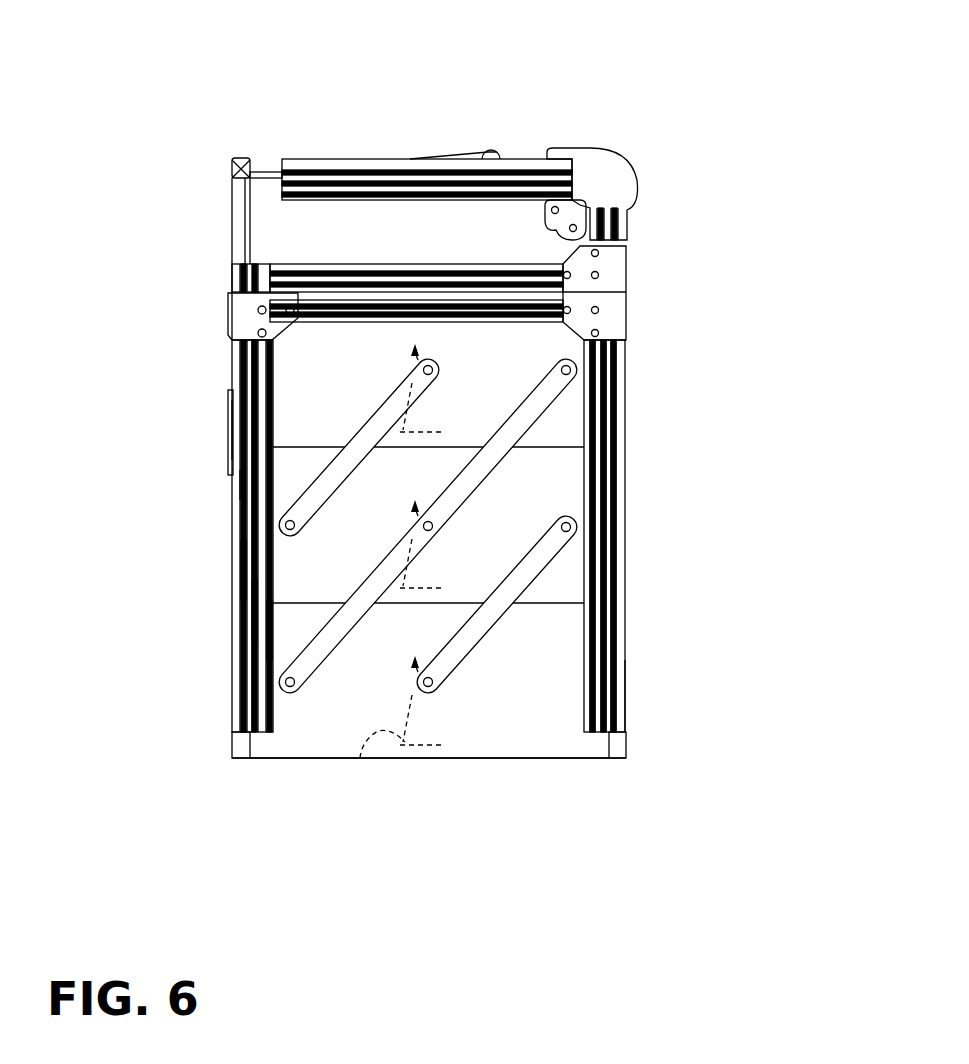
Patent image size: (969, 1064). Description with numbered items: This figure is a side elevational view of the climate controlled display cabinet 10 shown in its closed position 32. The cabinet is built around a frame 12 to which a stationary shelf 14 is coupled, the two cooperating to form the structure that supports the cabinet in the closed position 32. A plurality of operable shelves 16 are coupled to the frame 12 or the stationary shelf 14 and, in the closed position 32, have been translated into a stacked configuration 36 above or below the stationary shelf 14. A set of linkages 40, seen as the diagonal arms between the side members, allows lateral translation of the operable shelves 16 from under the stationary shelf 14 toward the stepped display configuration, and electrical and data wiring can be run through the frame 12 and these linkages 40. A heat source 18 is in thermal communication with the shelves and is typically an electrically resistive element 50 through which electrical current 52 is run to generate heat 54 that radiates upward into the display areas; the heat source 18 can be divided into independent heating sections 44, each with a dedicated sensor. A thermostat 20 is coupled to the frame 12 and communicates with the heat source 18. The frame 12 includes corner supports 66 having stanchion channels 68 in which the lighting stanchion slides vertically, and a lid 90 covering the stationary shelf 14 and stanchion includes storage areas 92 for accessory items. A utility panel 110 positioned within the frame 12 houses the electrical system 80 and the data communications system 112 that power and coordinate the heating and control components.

The climate controlled display cabinet 10 is at (136, 260).
The frame 12 is at (245, 652).
The stationary shelf 14 is at (494, 378).
The operable shelves 16 is at (524, 494).
The heat source 18 is at (445, 760).
The thermostat 20 is at (222, 428).
The closed position 32 is at (684, 632).
The stacked configuration 36 is at (654, 712).
The linkages 40 is at (478, 626).
The heating sections 44 is at (362, 736).
The electrically resistive element 50 is at (440, 432).
The electrical current 52 is at (396, 418).
The heat 54 is at (430, 542).
The corner supports 66 is at (240, 566).
The stanchion channels 68 is at (222, 636).
The electrical system 80 is at (222, 406).
The lid 90 is at (396, 214).
The storage areas 92 is at (352, 238).
The utility panel 110 is at (230, 600).
The data communications system 112 is at (208, 480).